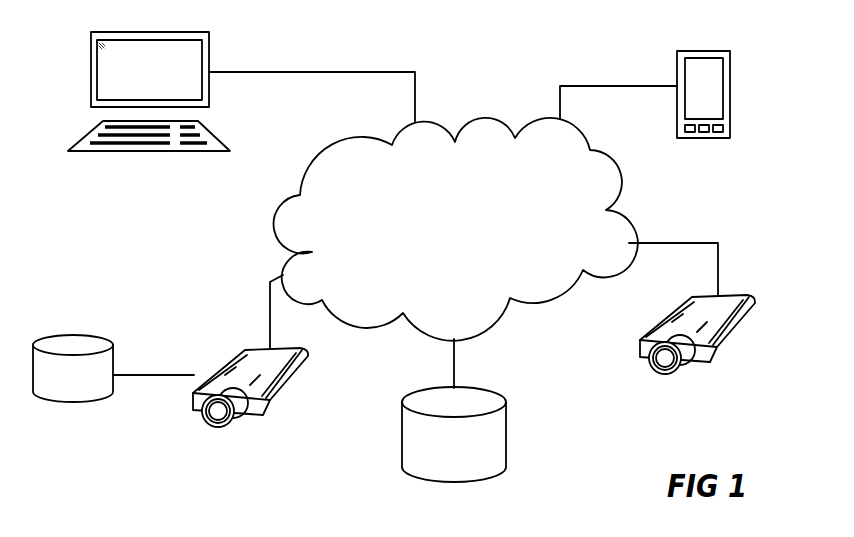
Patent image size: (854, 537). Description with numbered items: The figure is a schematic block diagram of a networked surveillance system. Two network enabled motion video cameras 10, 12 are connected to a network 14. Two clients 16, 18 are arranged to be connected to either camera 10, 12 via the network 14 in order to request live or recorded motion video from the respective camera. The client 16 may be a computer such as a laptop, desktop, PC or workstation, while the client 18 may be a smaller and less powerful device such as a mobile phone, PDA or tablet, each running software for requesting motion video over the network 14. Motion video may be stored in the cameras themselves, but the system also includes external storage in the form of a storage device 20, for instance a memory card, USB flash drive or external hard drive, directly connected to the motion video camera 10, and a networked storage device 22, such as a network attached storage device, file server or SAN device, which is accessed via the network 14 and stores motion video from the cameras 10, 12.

The network enabled motion video camera 10 is at (278, 404).
The network enabled motion video camera 12 is at (730, 348).
The network 14 is at (449, 235).
The client 16 is at (208, 45).
The client 18 is at (690, 72).
The storage device 20 is at (97, 387).
The networked storage device 22 is at (497, 430).